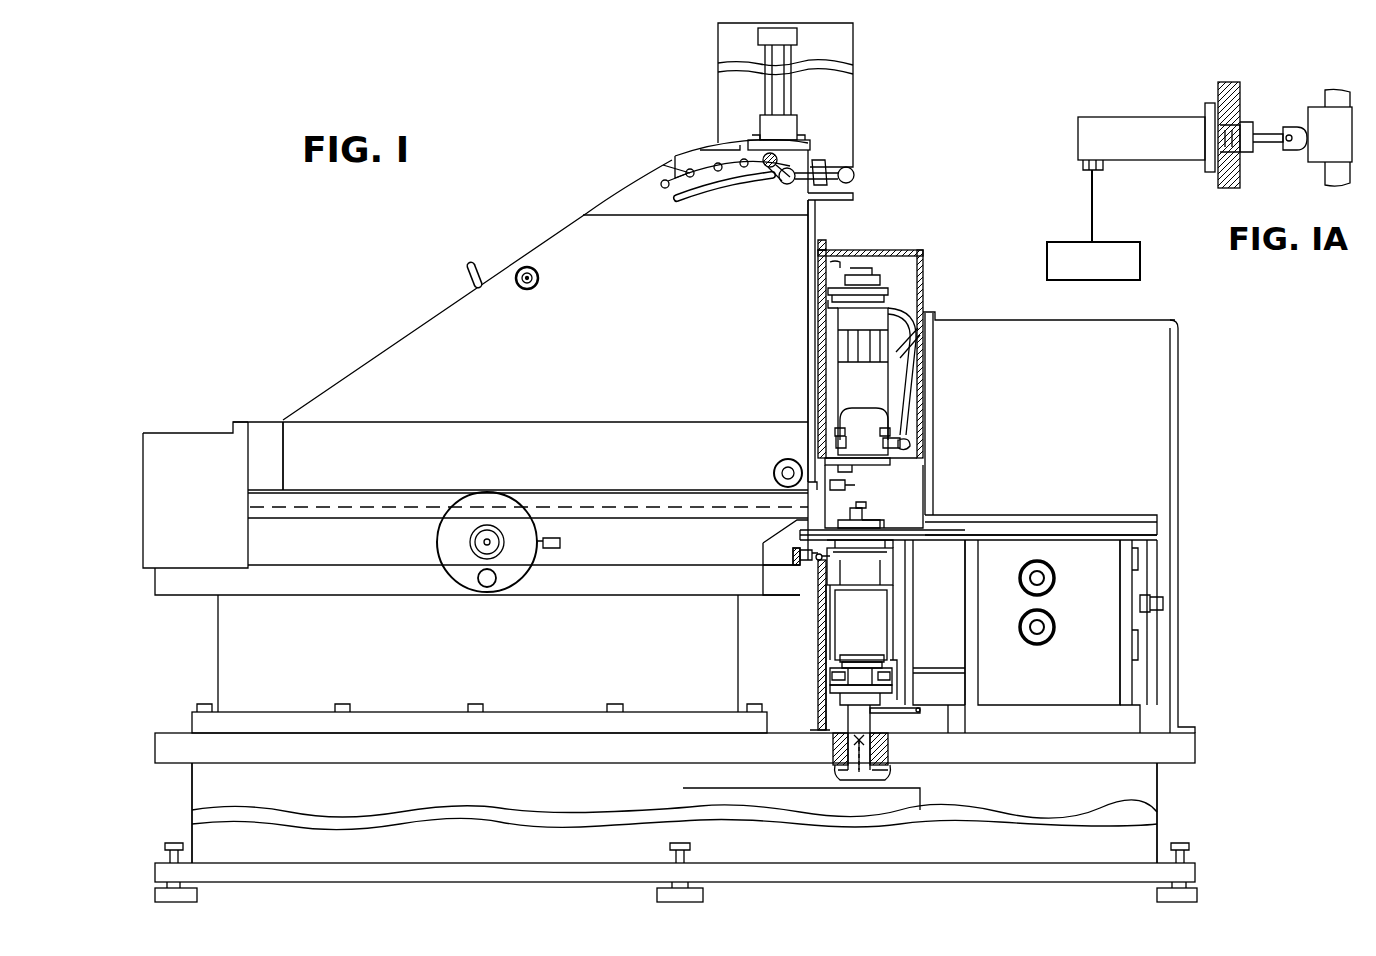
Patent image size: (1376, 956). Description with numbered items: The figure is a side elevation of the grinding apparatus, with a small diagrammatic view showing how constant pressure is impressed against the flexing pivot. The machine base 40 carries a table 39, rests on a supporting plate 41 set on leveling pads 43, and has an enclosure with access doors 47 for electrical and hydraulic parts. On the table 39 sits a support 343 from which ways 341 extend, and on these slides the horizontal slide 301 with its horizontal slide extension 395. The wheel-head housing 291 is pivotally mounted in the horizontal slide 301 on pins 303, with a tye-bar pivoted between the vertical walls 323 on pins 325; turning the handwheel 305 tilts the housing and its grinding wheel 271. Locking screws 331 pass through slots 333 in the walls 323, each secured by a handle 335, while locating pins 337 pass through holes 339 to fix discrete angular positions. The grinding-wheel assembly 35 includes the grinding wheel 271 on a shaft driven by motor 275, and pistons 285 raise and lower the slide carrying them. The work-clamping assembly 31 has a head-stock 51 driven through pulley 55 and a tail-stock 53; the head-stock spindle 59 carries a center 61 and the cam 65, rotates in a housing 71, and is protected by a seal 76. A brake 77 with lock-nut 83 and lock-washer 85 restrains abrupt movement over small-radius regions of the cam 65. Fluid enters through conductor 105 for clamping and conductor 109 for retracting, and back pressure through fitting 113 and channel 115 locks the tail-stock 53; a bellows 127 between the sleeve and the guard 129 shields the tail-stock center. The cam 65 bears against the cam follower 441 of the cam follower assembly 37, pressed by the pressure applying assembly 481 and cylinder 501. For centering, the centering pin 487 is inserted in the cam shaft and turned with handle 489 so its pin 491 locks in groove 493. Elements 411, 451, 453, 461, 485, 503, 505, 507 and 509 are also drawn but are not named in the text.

In FIG. 1, the motor 275 is at (866, 110).
In FIG. 1, the pistons 285 is at (785, 101).
In FIG. 1, the wheel-head housing 291 is at (686, 157).
In FIG. 1, the slots 333 is at (686, 192).
In FIG. 1, the locating pins 337 is at (772, 182).
In FIG. 1, the locking screws 331 is at (792, 186).
In FIG. 1, the handle 335 is at (812, 178).
In FIG. 1, the holes 339 is at (665, 172).
In FIG. 1, the vertical walls 323 is at (388, 355).
In FIG. 1, the handwheel 305 is at (490, 257).
In FIG. 1, the pins 325 is at (540, 281).
In FIG. 1, the horizontal slide extension 395 is at (254, 422).
In FIG. 1, the horizontal slide 301 is at (278, 412).
In FIG. 1, the ways 341 is at (386, 506).
In FIG. 1, the hand wheel 411 is at (440, 548).
In FIG. 1, the support 343 is at (218, 640).
In FIG. 1, the table 39 is at (176, 732).
In FIG. 1, the access doors 47 is at (683, 800).
In FIG. 1, the machine base 40 is at (633, 845).
In FIG. 1, the supporting plate 41 is at (620, 882).
In FIG. 1, the leveling pads 43 is at (702, 895).
In FIG. 1, the pins 303 is at (775, 468).
In FIG. 1, the grinding-wheel assembly 35 is at (797, 326).
In FIG. 1, the tail-stock 53 is at (876, 389).
In FIG. 1, the conductor 105 is at (902, 316).
In FIG. 1, the conductor 109 is at (921, 355).
In FIG. 1, the channel 115 is at (862, 428).
In FIG. 1, the fitting 113 is at (912, 446).
In FIG. 1, the guard 129 is at (929, 416).
In FIG. 1, the bellows 127 is at (890, 466).
In FIG. 1, the grinding wheel 271 is at (855, 490).
In FIG. 1, the work-clamping assembly 31 is at (913, 501).
In FIG. 1, the spindle 59 is at (852, 518).
In FIG. 1, the center 61 is at (888, 504).
In FIG. 1, the seal 76 is at (882, 526).
In FIG. 1, the cam 65 is at (860, 566).
In FIG. 1, the cam follower 441 is at (958, 540).
In FIG. 1, the cam follower assembly 37 is at (952, 597).
In FIG. 1, the control panel 453 is at (1056, 712).
In FIG. 1, the side bar 451 is at (1132, 557).
In FIG. 1, the clamp bolt 461 is at (1165, 605).
In FIG. 1, the pressure applying assembly 481 is at (788, 578).
In FIG. 1, the mounting plate 485 is at (818, 630).
In FIG. 1A, the mounting plate 485 is at (1226, 184).
In FIG. 1, the head-stock 51 is at (870, 618).
In FIG. 1, the lock-washer 85 is at (861, 639).
In FIG. 1, the lock-nut 83 is at (866, 664).
In FIG. 1, the brake 77 is at (830, 672).
In FIG. 1, the pulley 55 is at (892, 690).
In FIG. 1, the pin 491 is at (864, 742).
In FIG. 1, the groove 493 is at (886, 742).
In FIG. 1, the centering pin 487 is at (890, 777).
In FIG. 1, the handle 489 is at (922, 714).
In FIG. 1A, the cylinder 501 is at (1102, 120).
In FIG. 1A, the air line 505 is at (1093, 214).
In FIG. 1A, the air supply 503 is at (1142, 266).
In FIG. 1A, the piston rod 507 is at (1265, 137).
In FIG. 1A, the clevis 509 is at (1295, 125).
In FIG. 1A, the housing 71 is at (1326, 92).